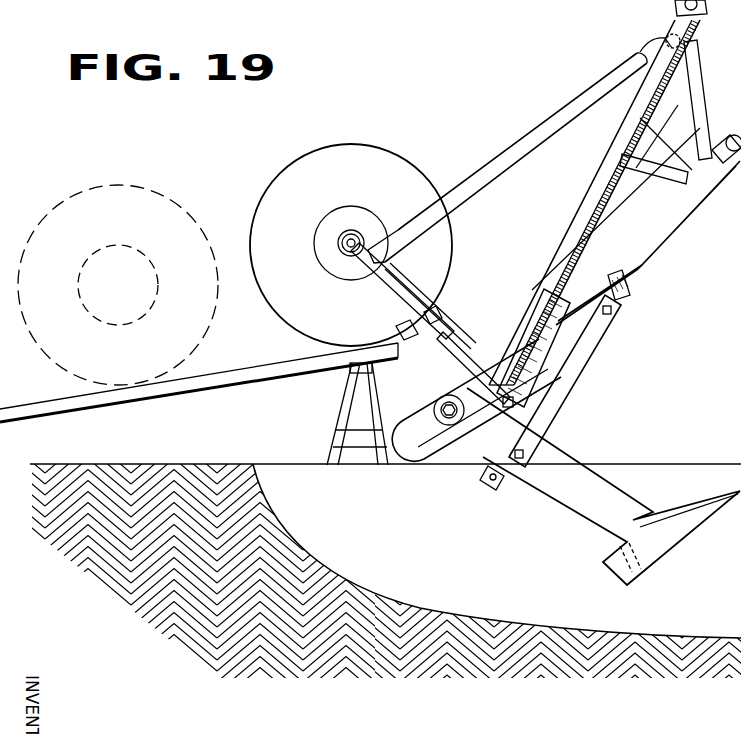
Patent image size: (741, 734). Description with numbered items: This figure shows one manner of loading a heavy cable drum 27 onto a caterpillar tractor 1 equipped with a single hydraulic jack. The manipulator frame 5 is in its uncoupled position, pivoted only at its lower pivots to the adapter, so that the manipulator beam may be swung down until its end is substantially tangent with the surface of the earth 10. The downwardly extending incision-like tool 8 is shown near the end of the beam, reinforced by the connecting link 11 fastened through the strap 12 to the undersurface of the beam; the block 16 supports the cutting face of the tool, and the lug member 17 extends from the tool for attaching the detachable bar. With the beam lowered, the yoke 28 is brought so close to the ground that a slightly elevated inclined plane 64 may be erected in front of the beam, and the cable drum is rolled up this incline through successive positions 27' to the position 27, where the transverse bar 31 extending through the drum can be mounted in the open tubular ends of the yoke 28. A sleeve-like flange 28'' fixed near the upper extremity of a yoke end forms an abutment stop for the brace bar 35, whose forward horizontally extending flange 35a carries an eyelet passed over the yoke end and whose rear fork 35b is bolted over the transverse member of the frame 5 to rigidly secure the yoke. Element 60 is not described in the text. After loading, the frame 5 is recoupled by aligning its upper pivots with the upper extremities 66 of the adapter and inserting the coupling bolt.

The caterpillar tractor 1 is at (693, 410).
The manipulator frame 5 is at (612, 157).
The incision-like tool 8 is at (580, 488).
The surface of the earth 10 is at (186, 465).
The connecting link 11 is at (552, 400).
The strap 12 is at (622, 298).
The block 16 is at (423, 453).
The lug member 17 is at (497, 478).
The heavy cable drum 27 is at (351, 230).
The heavy cable drum in successive positions 27' is at (118, 257).
The yoke 28 is at (569, 267).
The sleeve-like flange 28'' is at (425, 325).
The transverse bar 31 is at (358, 232).
The brace bar 35 is at (478, 180).
The horizontally extending flange 35a is at (340, 268).
The fork 35b is at (656, 54).
The screw rod bracket 60 is at (726, 181).
The inclined plane 64 is at (205, 380).
The upper extremities of the adapter 66 is at (347, 397).